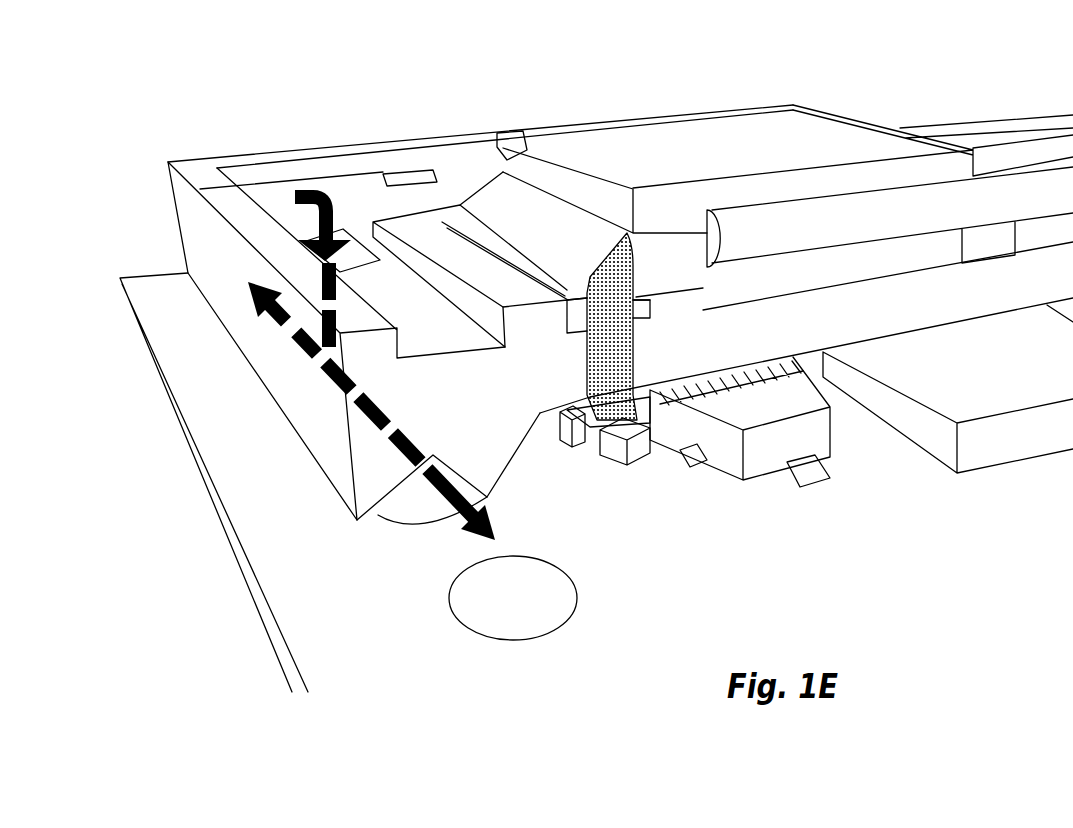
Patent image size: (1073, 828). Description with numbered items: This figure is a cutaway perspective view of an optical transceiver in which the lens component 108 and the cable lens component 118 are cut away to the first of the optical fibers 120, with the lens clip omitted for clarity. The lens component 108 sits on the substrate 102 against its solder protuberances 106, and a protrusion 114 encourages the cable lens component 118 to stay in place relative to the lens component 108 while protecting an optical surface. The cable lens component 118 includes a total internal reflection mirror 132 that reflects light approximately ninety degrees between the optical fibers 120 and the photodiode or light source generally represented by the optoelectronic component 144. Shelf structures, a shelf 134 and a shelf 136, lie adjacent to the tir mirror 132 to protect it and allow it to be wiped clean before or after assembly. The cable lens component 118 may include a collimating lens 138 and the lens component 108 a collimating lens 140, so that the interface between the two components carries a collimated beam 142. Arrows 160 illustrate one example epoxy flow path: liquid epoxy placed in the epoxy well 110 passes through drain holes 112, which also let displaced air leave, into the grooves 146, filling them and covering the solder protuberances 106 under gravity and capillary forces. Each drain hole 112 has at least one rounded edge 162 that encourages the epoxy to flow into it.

The substrate 102 is at (335, 609).
The solder protuberances 106 is at (495, 609).
The lens component 108 is at (767, 339).
The epoxy well 110 is at (360, 200).
The drain holes 112 is at (433, 180).
The protrusion 114 is at (497, 298).
The cable lens component 118 is at (747, 155).
The optical fibers 120 is at (788, 233).
The total internal reflection (tir) mirror 132 is at (547, 248).
The shelf 134 is at (524, 172).
The shelf 136 is at (484, 240).
The collimating lens 138 is at (640, 293).
The collimating lens 140 is at (637, 390).
The collimated beam 142 is at (637, 347).
The optoelectronic component 144 is at (640, 465).
The grooves 146 is at (393, 493).
The arrows 160 is at (310, 357).
The rounded edge 162 is at (362, 250).